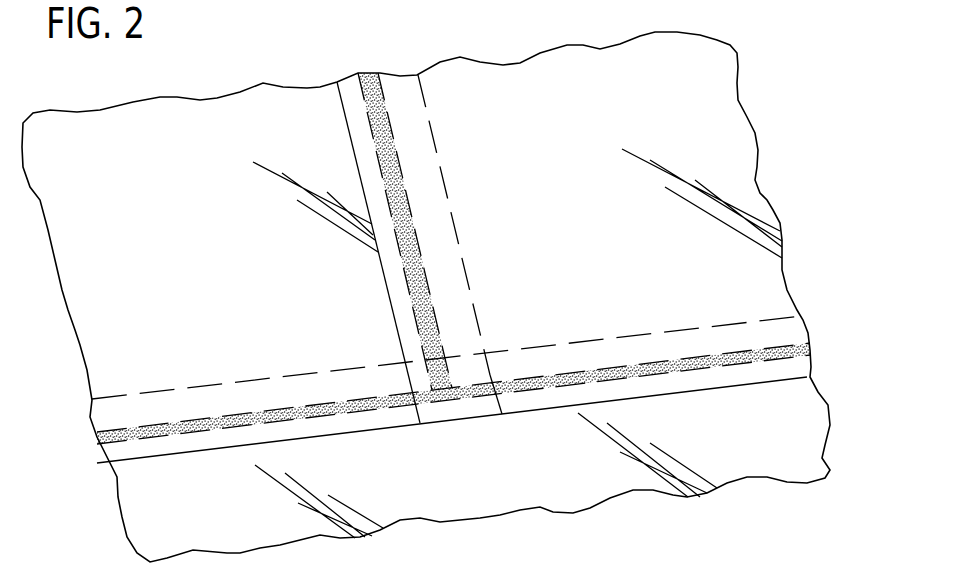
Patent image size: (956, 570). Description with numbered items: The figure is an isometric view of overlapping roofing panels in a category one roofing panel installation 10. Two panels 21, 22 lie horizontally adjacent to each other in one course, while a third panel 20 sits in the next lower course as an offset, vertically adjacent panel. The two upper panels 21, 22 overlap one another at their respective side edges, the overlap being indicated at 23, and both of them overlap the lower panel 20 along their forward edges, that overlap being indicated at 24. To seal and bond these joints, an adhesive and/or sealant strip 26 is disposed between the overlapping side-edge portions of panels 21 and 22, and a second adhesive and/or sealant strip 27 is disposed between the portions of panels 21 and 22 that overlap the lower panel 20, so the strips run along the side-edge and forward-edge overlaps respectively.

The display device 10 is at (773, 67).
The panel 20 is at (377, 435).
The panel 21 is at (183, 181).
The panel 22 is at (607, 123).
The side edge overlap 23 is at (458, 242).
The forward edge overlap 24 is at (270, 380).
The adhesive and/or sealant strip 26 is at (395, 190).
The adhesive and/or sealant strip 27 is at (653, 370).